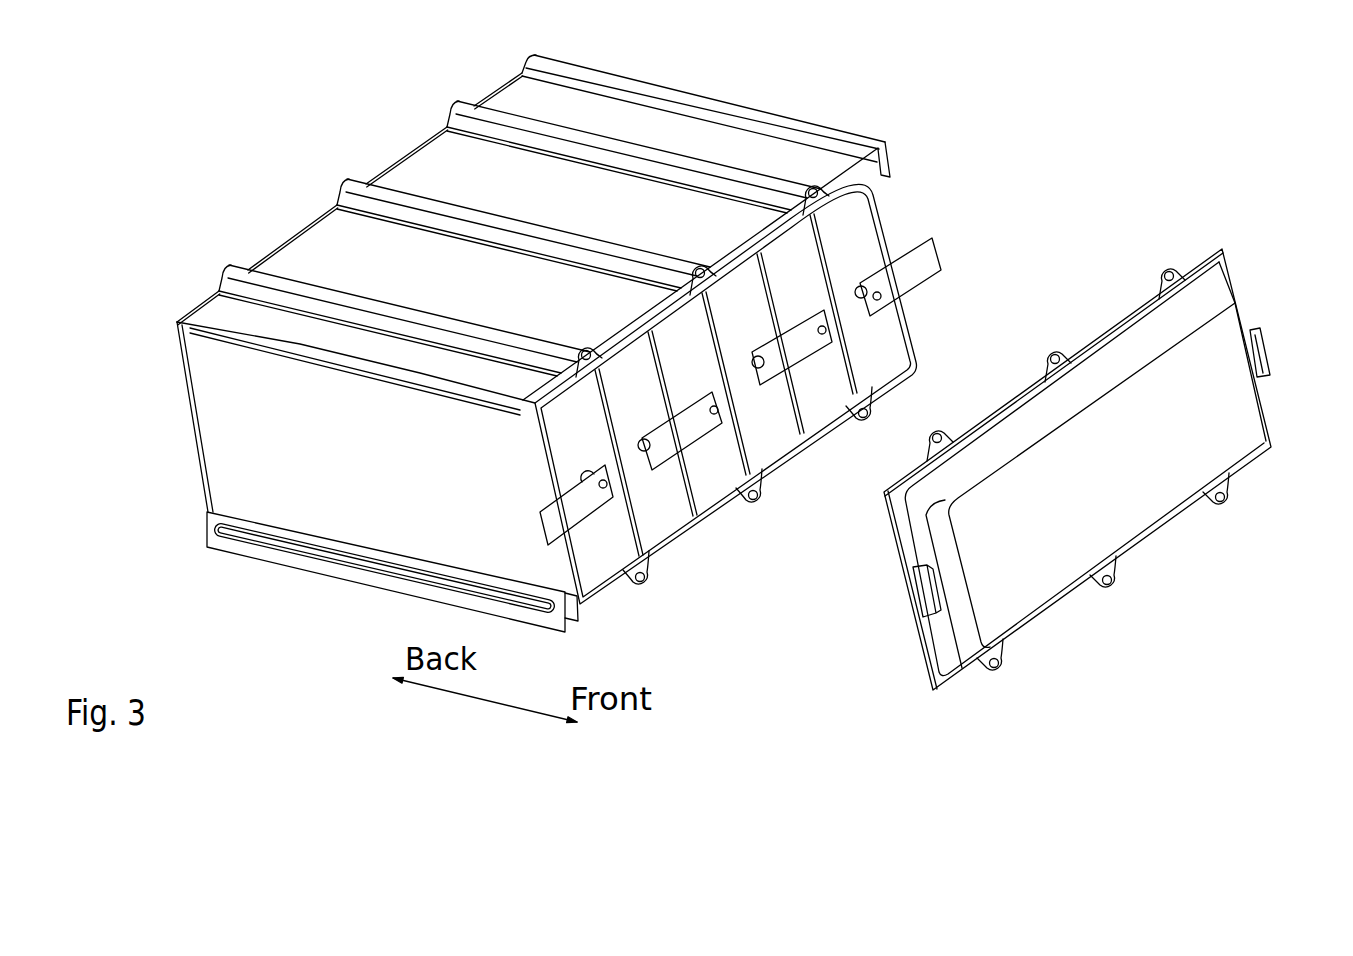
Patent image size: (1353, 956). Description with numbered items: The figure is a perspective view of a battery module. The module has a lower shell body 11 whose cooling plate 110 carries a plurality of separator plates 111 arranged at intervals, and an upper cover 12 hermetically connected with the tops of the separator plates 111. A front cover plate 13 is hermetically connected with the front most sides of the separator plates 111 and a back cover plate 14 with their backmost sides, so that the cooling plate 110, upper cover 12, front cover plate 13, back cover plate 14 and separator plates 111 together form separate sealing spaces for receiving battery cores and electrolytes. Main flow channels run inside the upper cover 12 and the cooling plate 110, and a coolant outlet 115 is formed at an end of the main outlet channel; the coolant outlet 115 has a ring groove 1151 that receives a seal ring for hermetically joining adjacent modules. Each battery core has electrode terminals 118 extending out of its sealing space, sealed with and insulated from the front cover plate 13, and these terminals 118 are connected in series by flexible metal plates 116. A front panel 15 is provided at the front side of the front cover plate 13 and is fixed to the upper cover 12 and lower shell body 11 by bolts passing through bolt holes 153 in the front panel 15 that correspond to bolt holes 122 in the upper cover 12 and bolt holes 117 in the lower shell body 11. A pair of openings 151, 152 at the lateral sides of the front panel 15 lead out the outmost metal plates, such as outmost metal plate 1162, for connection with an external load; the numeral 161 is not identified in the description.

The lower shell body 11 is at (797, 461).
The upper cover 12 is at (447, 162).
The front cover plate 13 is at (818, 392).
The back cover plate 14 is at (307, 228).
The front panel 15 is at (1004, 367).
The cooling plate 110 is at (688, 530).
The separator plates 111 is at (227, 410).
The coolant outlet 115 is at (223, 547).
The flexible metal plates 116 is at (803, 347).
The bolt holes 117 is at (761, 503).
The electrode terminals 118 is at (861, 298).
The bolt holes 122 is at (700, 268).
The opening 151 is at (923, 602).
The opening 152 is at (1255, 348).
The bolt holes 153 is at (1224, 495).
The terminal tab 161 is at (580, 500).
The ring groove 1151 is at (393, 582).
The outmost metal plate 1162 is at (921, 262).